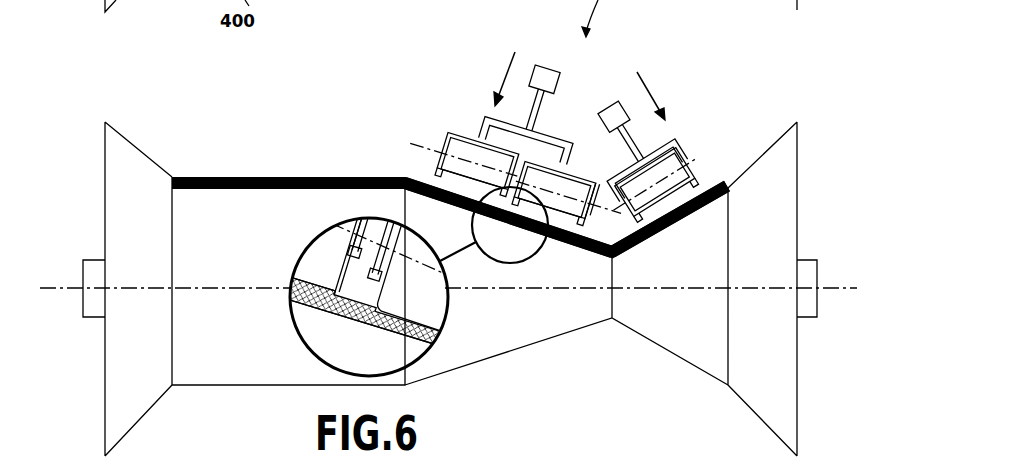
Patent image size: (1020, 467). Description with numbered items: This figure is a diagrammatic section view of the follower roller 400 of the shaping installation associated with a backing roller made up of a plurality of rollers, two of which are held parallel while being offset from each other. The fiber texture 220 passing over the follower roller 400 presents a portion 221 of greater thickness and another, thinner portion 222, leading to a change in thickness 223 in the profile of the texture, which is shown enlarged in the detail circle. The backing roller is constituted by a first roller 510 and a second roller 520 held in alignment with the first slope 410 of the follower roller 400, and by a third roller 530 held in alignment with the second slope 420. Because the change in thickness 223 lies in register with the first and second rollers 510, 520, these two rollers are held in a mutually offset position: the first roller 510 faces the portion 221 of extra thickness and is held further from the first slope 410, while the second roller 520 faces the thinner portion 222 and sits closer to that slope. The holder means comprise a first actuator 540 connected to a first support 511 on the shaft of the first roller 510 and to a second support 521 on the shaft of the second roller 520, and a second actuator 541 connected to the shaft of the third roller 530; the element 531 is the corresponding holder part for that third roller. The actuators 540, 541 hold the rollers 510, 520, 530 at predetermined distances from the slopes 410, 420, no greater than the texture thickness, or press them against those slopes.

The follower roller 400 is at (220, 399).
The fiber texture 220 is at (252, 177).
The portion of greater thickness 221 is at (292, 287).
The other portion 222 is at (437, 346).
The change in thickness 223 is at (340, 312).
The first slope 410 is at (466, 211).
The second slope 420 is at (686, 216).
The first roller 510 is at (443, 146).
The first support 511 is at (468, 128).
The second roller 520 is at (567, 228).
The second support 521 is at (589, 187).
The third roller 530 is at (653, 228).
The third sensor holder 531 is at (676, 142).
The first actuator 540 is at (547, 72).
The second actuator 541 is at (604, 102).